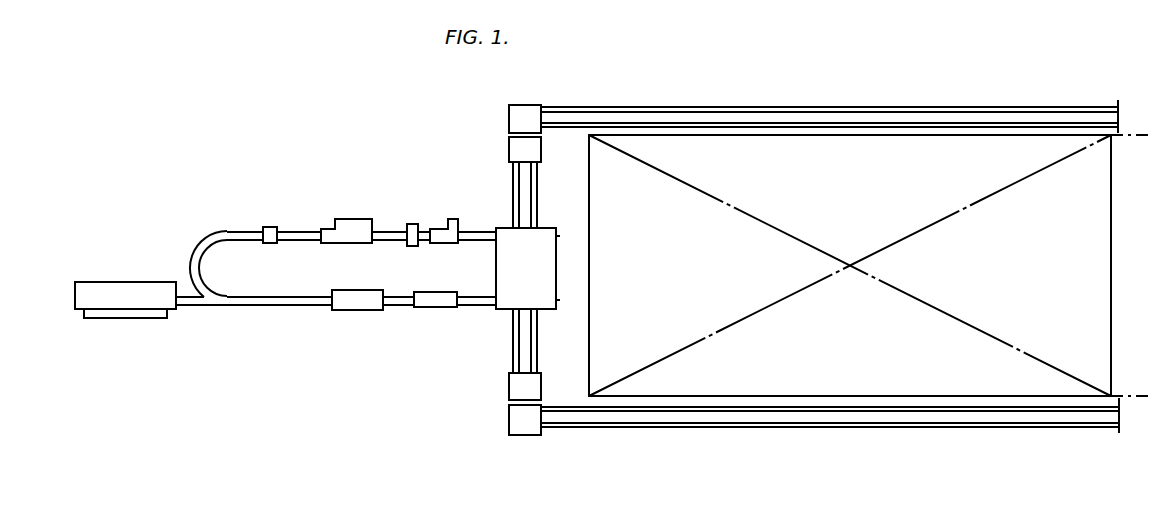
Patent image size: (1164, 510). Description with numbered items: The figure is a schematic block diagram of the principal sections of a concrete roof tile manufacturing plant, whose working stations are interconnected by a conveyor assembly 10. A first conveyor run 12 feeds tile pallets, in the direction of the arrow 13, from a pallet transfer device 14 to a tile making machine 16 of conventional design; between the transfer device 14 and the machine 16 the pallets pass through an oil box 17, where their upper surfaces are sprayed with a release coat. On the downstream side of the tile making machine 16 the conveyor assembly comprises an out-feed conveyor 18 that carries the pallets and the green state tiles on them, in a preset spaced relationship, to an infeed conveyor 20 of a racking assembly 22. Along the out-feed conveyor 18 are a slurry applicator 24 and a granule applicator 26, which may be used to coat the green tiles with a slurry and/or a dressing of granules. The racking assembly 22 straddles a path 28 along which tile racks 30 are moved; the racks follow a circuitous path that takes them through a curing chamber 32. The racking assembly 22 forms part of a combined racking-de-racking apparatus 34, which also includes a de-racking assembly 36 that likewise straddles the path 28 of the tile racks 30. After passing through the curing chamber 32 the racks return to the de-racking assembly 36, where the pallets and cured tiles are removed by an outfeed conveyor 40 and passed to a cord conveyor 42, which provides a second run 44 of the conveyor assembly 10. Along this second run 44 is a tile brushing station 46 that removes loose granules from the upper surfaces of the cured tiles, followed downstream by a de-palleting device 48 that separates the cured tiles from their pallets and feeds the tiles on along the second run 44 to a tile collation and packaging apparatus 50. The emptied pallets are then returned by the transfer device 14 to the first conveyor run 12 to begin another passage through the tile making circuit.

The conveyor assembly 10 is at (220, 336).
The first conveyor run 12 is at (249, 218).
The arrow 13 is at (438, 115).
The pallet transfer device 14 is at (195, 253).
The tile making machine 16 is at (345, 219).
The oil box 17 is at (270, 227).
The out-feed conveyor 18 is at (384, 232).
The infeed conveyor 20 is at (470, 232).
The racking assembly 22 is at (560, 237).
The slurry applicator 24 is at (412, 224).
The granule applicator 26 is at (443, 243).
The path 28 is at (546, 200).
The tile racks 30 is at (523, 108).
The curing chamber 32 is at (866, 221).
The combined racking-de-racking apparatus 34 is at (530, 277).
The de-racking assembly 36 is at (560, 300).
The outfeed conveyor 40 is at (470, 305).
The cord conveyor 42 is at (293, 306).
The second run 44 is at (352, 320).
The tile brushing station 46 is at (425, 307).
The de-palleting device 48 is at (353, 290).
The tile collation and packaging apparatus 50 is at (127, 305).